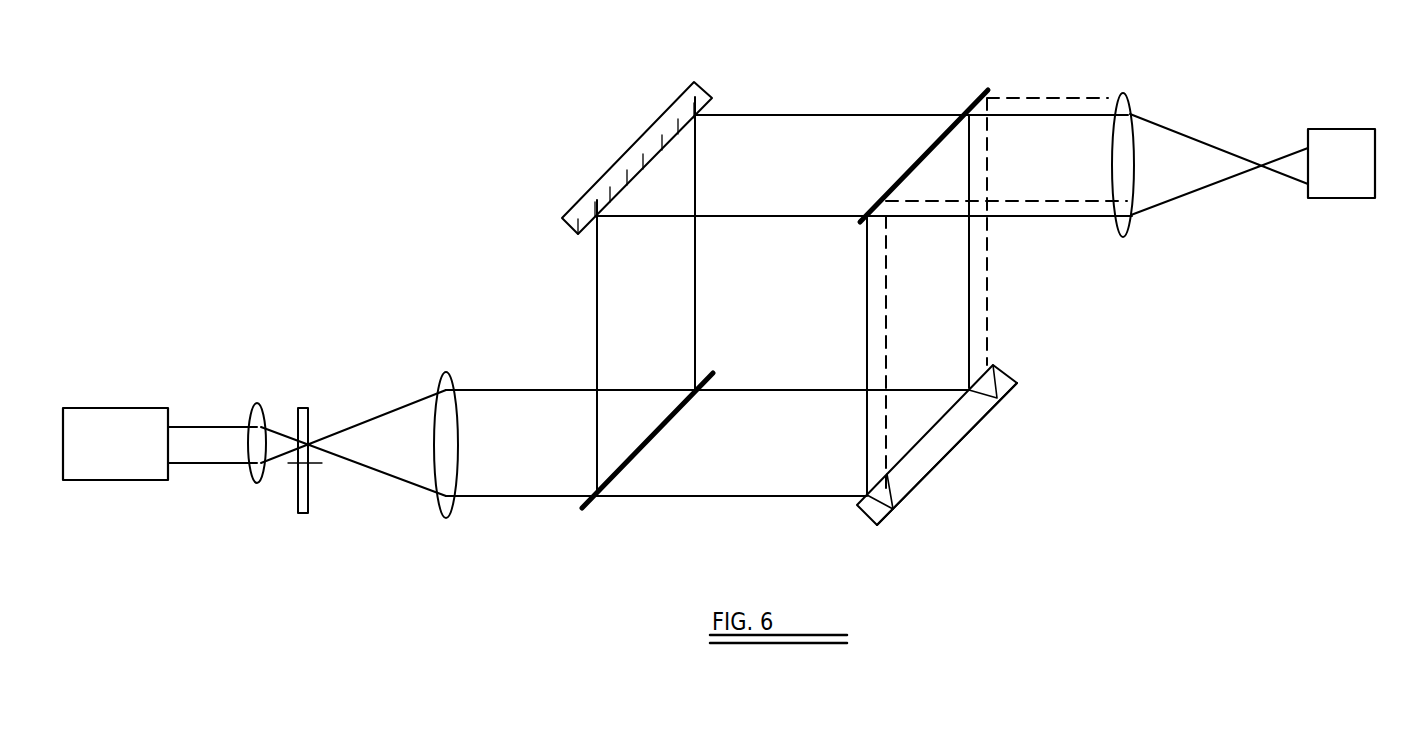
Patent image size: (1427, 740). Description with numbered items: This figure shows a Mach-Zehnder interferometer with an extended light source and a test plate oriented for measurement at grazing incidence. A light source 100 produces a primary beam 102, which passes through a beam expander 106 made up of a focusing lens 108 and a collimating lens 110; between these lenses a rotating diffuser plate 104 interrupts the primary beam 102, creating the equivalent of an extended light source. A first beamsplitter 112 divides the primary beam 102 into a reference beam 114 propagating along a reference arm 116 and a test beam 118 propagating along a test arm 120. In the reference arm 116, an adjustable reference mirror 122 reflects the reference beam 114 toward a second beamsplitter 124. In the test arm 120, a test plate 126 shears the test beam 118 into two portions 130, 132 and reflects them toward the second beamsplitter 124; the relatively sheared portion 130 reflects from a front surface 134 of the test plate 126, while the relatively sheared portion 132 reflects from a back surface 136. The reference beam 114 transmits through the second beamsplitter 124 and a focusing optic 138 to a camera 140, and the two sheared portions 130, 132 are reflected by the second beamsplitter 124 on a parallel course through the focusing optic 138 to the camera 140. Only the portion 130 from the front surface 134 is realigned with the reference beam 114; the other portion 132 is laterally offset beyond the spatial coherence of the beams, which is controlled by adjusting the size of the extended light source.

The light source 100 is at (110, 408).
The primary beam 102 is at (226, 466).
The rotating diffuser plate 104 is at (309, 511).
The beam expander 106 is at (353, 398).
The focusing lens 108 is at (261, 404).
The collimating lens 110 is at (446, 380).
The first beamsplitter 112 is at (622, 474).
The reference beam 114 is at (597, 280).
The reference arm 116 is at (791, 113).
The test beam 118 is at (775, 391).
The test arm 120 is at (725, 496).
The adjustable reference mirror 122 is at (640, 139).
The second beamsplitter 124 is at (977, 52).
The test plate 126 is at (933, 452).
The relatively sheared portion 130 is at (867, 280).
The relatively sheared portion 132 is at (1094, 94).
The front surface 134 is at (943, 410).
The back surface 136 is at (918, 485).
The focusing optic 138 is at (1132, 110).
The camera 140 is at (1350, 198).